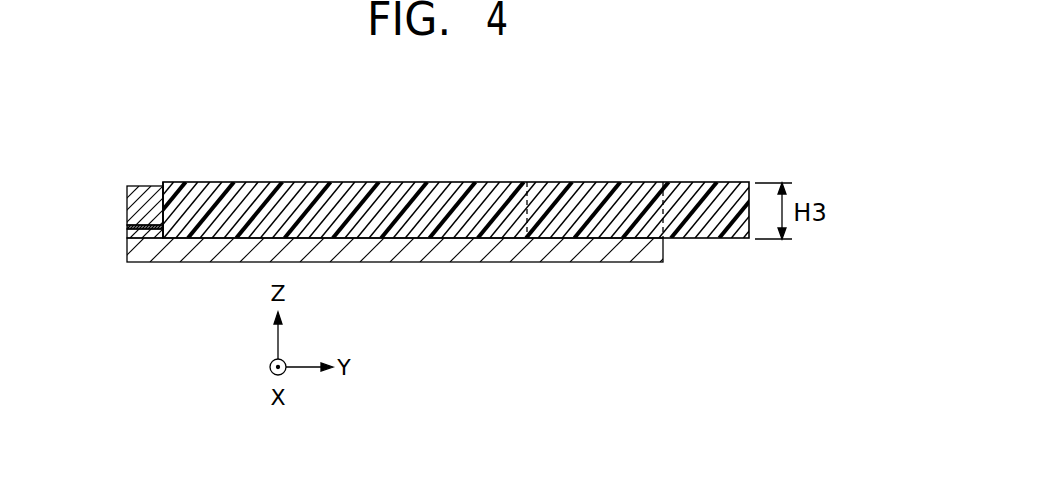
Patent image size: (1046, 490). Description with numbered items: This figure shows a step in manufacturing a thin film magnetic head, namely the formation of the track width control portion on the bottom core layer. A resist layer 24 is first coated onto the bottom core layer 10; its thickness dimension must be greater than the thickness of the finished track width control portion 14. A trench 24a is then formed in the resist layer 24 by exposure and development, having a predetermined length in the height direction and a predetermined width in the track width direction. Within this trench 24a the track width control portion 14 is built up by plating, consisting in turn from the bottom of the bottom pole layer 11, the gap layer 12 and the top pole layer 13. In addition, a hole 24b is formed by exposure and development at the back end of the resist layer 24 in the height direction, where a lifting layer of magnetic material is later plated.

The bottom core layer 10 is at (581, 255).
The bottom pole layer 11 is at (374, 253).
The gap layer 12 is at (127, 227).
The top pole layer 13 is at (127, 198).
The track width control portion 14 is at (348, 223).
The resist layer 24 is at (432, 207).
The trench 24a is at (145, 183).
The hole 24b is at (612, 200).